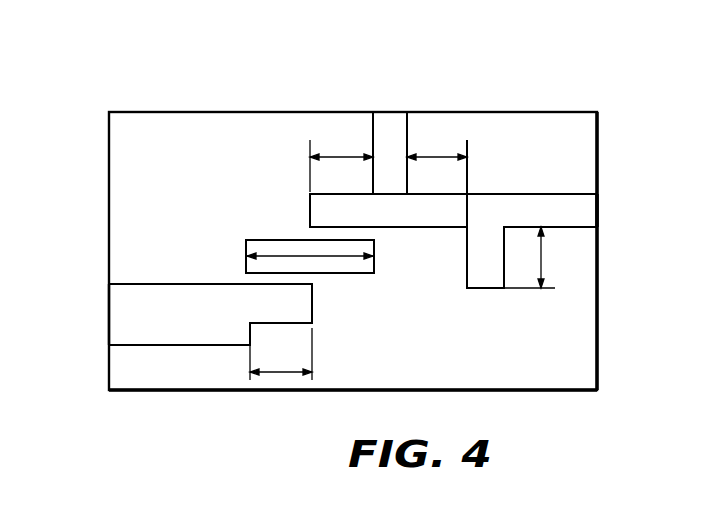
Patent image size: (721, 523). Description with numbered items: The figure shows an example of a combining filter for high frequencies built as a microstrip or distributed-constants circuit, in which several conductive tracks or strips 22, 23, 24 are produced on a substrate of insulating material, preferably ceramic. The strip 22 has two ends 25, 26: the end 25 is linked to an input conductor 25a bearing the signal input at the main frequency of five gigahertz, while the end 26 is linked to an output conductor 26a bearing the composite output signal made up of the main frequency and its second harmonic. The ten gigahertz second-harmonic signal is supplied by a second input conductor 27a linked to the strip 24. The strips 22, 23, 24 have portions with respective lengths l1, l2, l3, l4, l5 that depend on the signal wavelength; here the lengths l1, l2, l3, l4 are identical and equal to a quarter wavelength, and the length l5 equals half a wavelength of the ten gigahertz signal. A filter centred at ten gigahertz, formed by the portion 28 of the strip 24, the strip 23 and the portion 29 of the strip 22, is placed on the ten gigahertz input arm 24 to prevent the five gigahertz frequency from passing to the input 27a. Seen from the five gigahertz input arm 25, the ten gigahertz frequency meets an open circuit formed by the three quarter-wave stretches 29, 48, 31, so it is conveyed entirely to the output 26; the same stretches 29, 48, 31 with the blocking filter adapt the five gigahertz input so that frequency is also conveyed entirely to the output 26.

The strip 22 is at (393, 212).
The strip 23 is at (268, 241).
The strip 24 is at (178, 333).
The end of strip 25 is at (583, 208).
The input conductor 25a is at (598, 210).
The end of strip 26 is at (378, 122).
The output conductor 26a is at (392, 111).
The second input conductor 27a is at (109, 316).
The portion of strip 28 is at (307, 307).
The portion of strip 29 is at (310, 208).
The stretch 31 is at (483, 282).
The stretch 48 is at (440, 208).
The length l1 is at (341, 155).
The length l2 is at (437, 156).
The length l3 is at (541, 259).
The length l4 is at (282, 373).
The length l5 is at (333, 258).